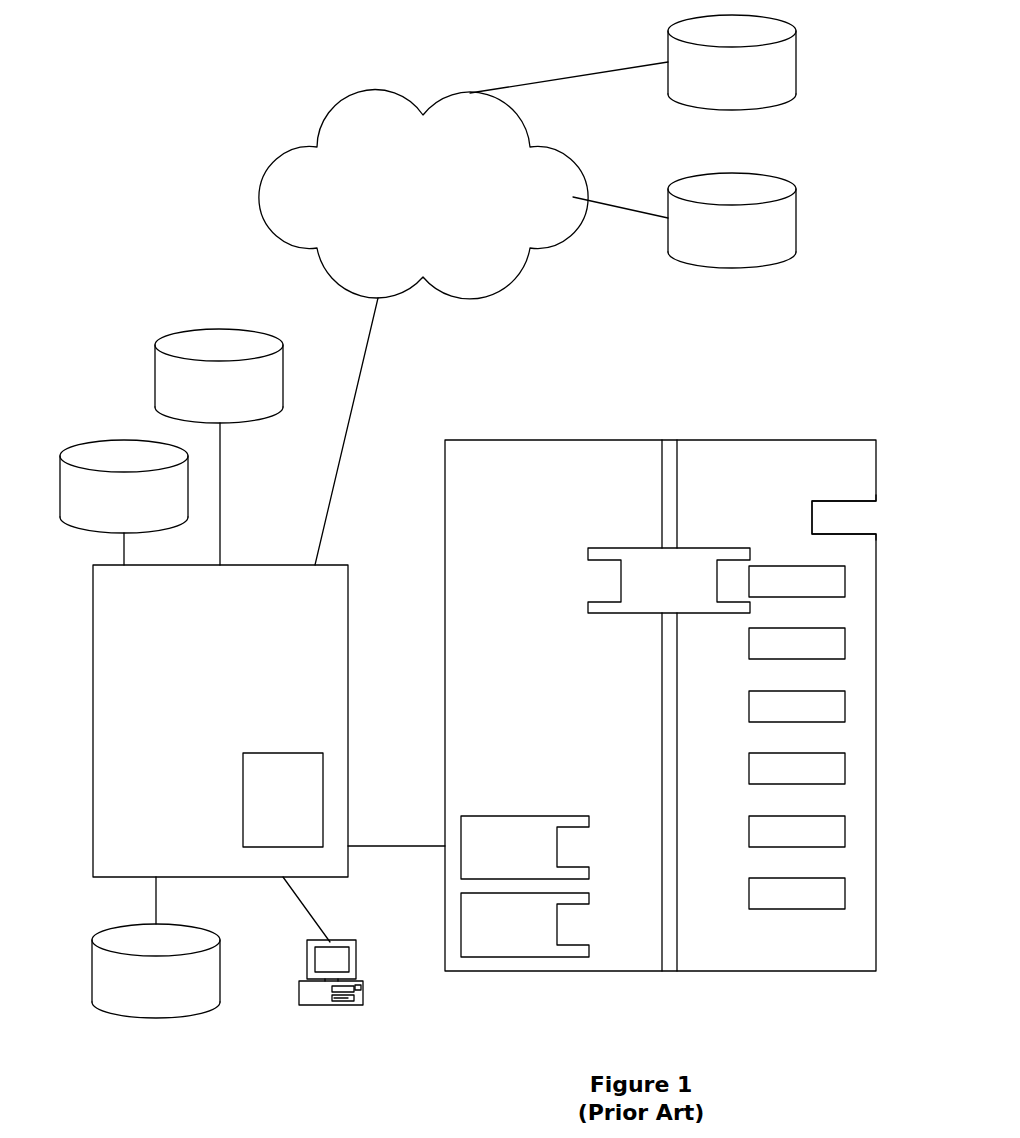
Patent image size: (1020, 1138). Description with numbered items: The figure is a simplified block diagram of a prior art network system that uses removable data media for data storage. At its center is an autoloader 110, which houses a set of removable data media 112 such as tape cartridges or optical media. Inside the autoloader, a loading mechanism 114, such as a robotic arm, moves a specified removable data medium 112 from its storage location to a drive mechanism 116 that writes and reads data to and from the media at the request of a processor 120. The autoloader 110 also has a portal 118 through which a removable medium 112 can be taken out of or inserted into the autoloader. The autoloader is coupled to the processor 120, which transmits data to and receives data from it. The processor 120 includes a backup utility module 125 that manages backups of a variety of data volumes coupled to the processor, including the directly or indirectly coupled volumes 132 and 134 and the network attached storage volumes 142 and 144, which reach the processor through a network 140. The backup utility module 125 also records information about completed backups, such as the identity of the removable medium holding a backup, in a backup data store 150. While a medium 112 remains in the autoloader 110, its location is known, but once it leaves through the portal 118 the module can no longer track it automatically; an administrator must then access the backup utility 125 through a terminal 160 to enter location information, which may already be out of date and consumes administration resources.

The autoloader 110 is at (492, 486).
The removable data media 112 is at (740, 973).
The loading mechanism 114 is at (726, 973).
The drive mechanism 116 is at (468, 973).
The portal 118 is at (828, 517).
The processor 120 is at (121, 603).
The backup utility module 125 is at (271, 808).
The volume 132 is at (112, 503).
The volume 134 is at (208, 391).
The network 140 is at (411, 205).
The network attached storage volume 142 is at (721, 80).
The network attached storage volume 144 is at (721, 237).
The backup data store 150 is at (145, 988).
The terminal 160 is at (333, 1005).